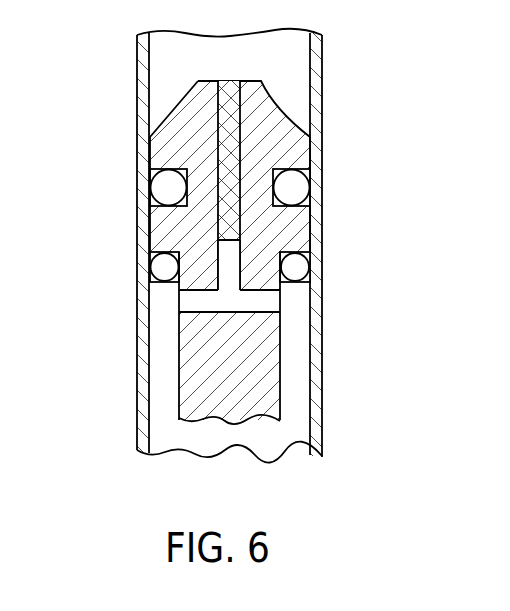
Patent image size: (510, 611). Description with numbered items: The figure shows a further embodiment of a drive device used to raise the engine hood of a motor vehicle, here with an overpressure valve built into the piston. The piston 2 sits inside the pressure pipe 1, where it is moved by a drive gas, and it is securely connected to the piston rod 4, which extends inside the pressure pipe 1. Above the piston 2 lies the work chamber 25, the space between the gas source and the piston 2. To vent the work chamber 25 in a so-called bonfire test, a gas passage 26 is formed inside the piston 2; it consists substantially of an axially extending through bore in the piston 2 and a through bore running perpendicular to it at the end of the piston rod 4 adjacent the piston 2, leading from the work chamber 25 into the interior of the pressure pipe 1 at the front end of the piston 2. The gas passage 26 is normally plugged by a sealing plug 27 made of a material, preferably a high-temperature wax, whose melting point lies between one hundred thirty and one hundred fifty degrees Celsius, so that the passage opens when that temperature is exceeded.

The pressure pipe 1 is at (146, 337).
The work chamber 25 is at (292, 57).
The piston 2 is at (177, 225).
The sealing plug 27 is at (228, 125).
The gas passage 26 is at (227, 277).
The piston rod 4 is at (262, 374).